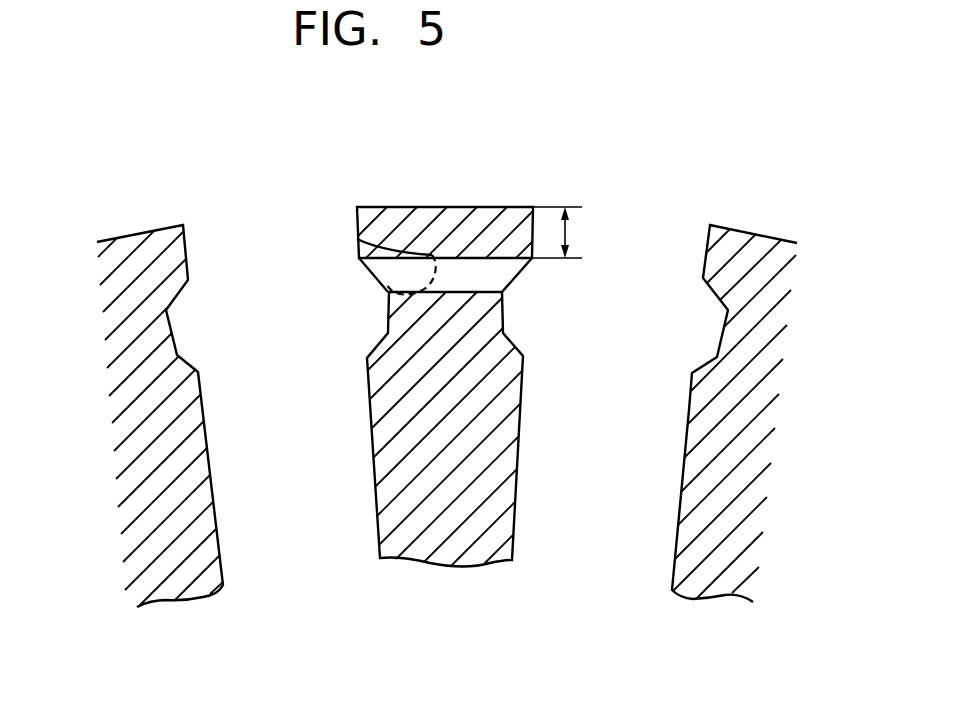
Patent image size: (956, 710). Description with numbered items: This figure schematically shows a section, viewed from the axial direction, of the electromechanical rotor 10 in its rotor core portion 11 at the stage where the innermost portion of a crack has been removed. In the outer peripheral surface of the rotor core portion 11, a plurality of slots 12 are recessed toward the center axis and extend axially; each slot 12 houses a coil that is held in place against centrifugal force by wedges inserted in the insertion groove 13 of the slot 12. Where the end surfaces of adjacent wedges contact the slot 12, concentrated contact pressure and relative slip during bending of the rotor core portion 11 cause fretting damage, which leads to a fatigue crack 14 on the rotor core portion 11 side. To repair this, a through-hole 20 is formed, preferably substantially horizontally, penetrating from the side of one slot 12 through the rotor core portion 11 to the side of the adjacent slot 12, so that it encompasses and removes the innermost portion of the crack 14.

The electromechanical rotor 10 is at (210, 180).
The rotor core portion 11 is at (445, 223).
The slot 12 is at (268, 258).
The insertion groove 13 is at (382, 310).
The crack 14 is at (383, 245).
The through-hole 20 is at (386, 266).